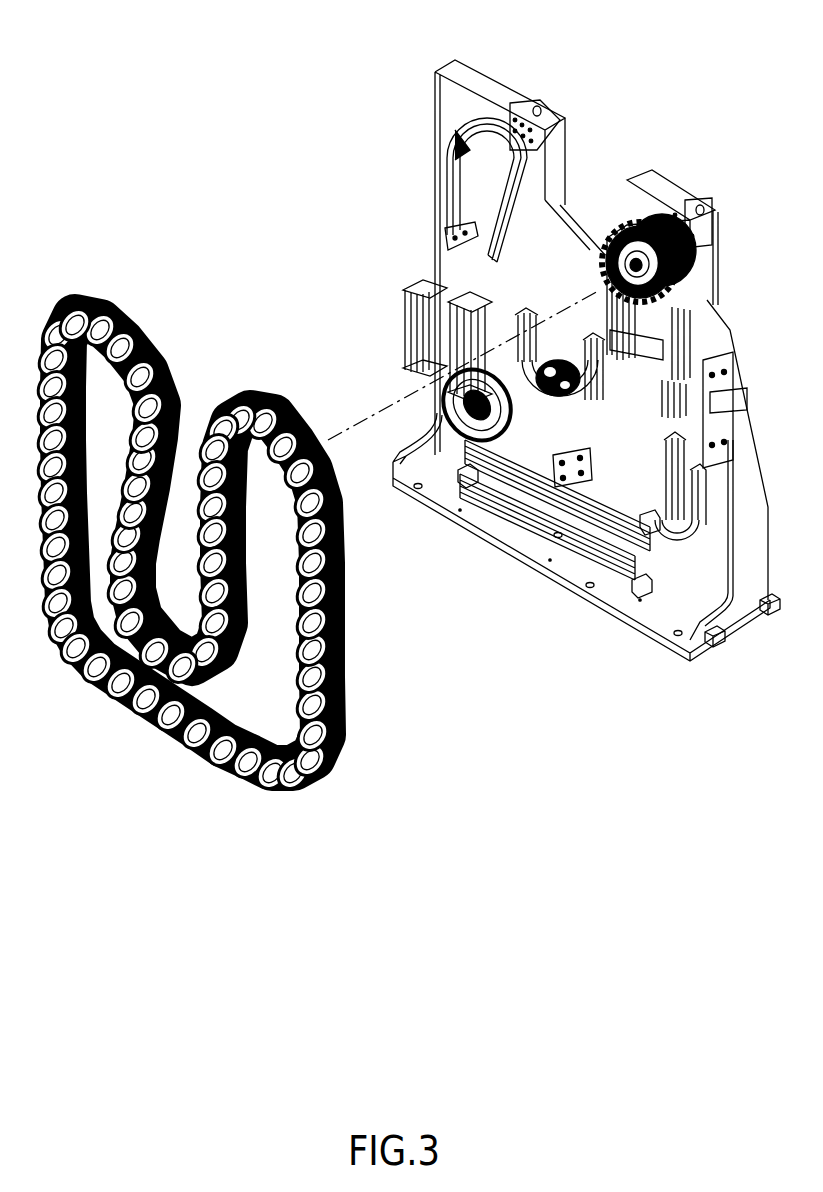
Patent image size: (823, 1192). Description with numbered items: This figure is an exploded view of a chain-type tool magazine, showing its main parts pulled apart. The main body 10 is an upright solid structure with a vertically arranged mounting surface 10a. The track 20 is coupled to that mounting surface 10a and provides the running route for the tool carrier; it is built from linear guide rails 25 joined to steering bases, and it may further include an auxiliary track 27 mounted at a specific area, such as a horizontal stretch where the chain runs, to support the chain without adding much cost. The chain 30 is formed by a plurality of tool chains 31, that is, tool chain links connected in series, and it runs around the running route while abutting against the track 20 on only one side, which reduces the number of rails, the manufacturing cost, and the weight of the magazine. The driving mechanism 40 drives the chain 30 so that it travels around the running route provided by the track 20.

The main body 10 is at (552, 358).
The mounting surface 10a is at (470, 268).
The track 20 is at (440, 123).
The linear guide rail 25 is at (604, 522).
The auxiliary track 27 is at (588, 542).
The chain 30 is at (222, 500).
The tool chain 31 is at (337, 690).
The driving mechanism 40 is at (718, 248).